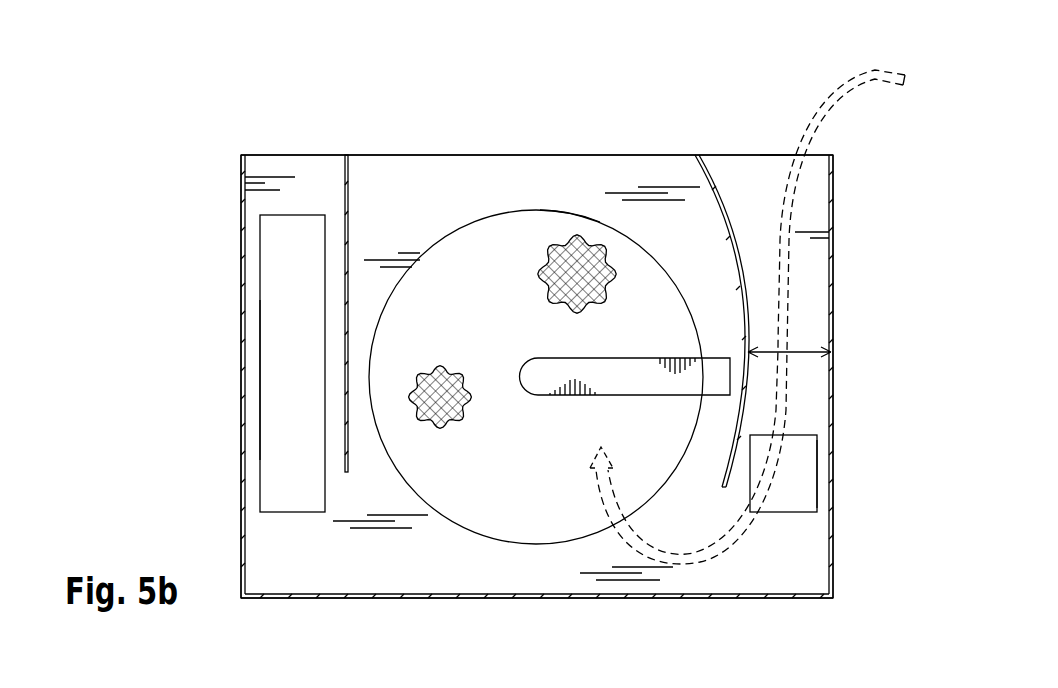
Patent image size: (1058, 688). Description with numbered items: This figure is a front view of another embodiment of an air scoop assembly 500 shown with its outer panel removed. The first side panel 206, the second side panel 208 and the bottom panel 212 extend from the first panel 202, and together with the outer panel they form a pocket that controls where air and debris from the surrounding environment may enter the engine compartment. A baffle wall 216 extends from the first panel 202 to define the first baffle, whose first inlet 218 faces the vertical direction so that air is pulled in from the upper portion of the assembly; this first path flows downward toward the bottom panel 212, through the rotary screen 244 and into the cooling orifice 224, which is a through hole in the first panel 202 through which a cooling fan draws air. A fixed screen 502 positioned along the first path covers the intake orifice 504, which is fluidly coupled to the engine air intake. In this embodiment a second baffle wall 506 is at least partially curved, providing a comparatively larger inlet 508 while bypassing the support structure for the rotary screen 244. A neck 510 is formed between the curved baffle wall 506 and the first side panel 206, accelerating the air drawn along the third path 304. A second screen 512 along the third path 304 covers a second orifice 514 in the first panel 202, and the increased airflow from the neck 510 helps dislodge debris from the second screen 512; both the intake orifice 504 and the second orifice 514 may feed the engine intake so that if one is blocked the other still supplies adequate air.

The air scoop assembly 500 is at (140, 122).
The first inlet 218 is at (281, 146).
The second side panel 208 is at (240, 230).
The first side panel 206 is at (835, 245).
The bottom panel 212 is at (538, 598).
The baffle wall 216 is at (348, 184).
The first panel 202 is at (426, 223).
The fixed screen 502 is at (268, 446).
The intake orifice 504 is at (246, 376).
The rotary screen 244 is at (500, 220).
The cooling orifice 224 is at (579, 203).
The second baffle wall 506 is at (712, 186).
The third path 304 is at (878, 80).
The inlet 508 is at (762, 133).
The neck 510 is at (800, 352).
The second screen 512 is at (800, 498).
The second orifice 514 is at (828, 462).